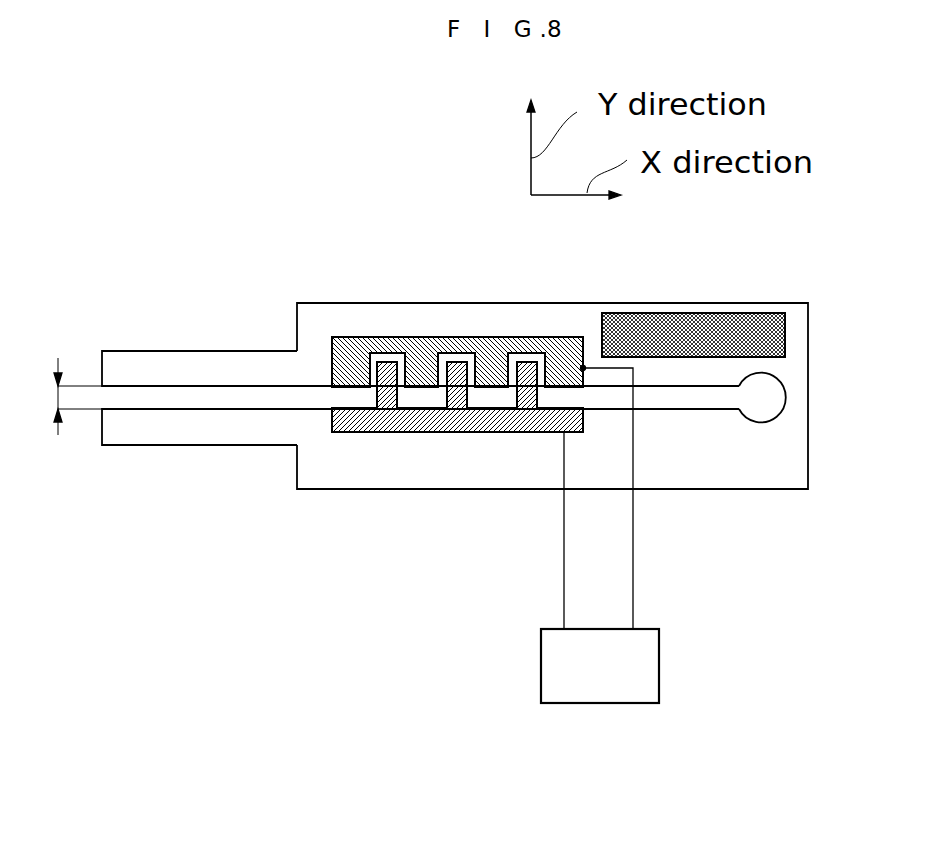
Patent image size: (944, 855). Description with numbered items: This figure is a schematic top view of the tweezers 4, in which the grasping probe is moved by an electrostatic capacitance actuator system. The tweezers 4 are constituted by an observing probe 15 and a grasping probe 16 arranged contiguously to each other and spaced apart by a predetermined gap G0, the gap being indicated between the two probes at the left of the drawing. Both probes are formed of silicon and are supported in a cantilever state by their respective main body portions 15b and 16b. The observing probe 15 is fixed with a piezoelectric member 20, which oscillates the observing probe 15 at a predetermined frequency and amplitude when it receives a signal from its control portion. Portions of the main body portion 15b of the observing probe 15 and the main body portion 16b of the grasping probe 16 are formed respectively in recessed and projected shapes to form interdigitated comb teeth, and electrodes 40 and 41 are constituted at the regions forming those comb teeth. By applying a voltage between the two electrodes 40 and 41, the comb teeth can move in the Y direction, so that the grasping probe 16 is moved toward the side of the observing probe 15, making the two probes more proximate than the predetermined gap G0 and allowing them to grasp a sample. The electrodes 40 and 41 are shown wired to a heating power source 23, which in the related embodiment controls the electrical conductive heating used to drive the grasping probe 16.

The tweezers 4 is at (583, 390).
The observing probe 15 is at (167, 351).
The main body portion 15b is at (345, 303).
The grasping probe 16 is at (180, 446).
The main body portion 16b is at (363, 485).
The piezoelectric member 20 is at (723, 327).
The heating power source 23 is at (634, 692).
The electrode 40 is at (488, 335).
The electrode 41 is at (428, 434).
The predetermined gap G0 is at (56, 396).